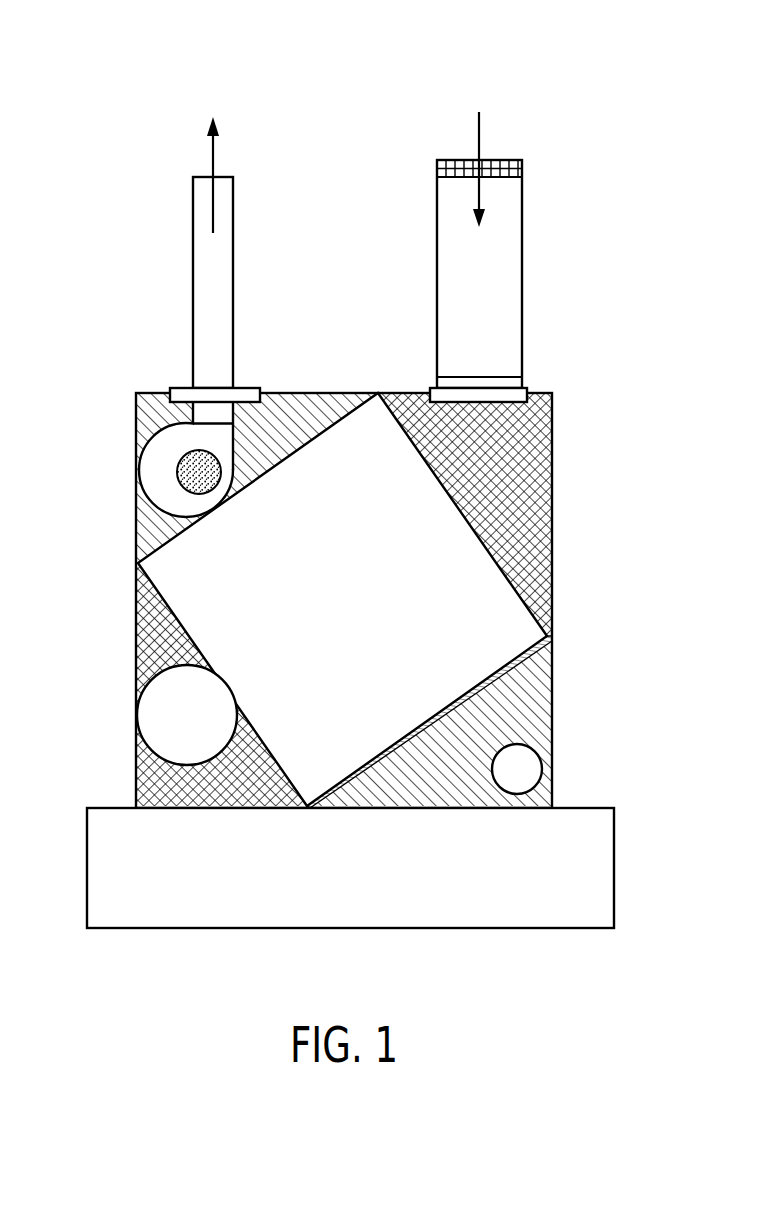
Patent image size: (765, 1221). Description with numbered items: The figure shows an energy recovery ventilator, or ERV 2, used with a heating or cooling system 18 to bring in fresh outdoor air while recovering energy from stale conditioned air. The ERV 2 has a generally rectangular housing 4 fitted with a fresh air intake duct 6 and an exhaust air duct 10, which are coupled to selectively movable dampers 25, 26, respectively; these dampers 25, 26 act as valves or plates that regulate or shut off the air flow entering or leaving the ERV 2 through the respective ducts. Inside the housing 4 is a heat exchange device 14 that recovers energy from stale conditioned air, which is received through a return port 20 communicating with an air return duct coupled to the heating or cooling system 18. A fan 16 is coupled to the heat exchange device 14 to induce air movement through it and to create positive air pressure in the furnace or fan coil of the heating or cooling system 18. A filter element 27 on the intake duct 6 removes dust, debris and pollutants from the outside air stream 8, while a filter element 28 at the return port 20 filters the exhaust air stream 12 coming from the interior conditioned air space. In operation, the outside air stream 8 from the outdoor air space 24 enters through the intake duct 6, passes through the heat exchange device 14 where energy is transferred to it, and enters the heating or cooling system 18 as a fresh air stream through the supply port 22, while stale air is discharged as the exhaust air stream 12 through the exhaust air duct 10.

The energy recovery ventilator 2 is at (590, 441).
The housing 4 is at (148, 628).
The fresh air intake duct 6 is at (513, 280).
The outside air stream 8 is at (481, 130).
The exhaust air duct 10 is at (202, 282).
The exhaust air stream 12 is at (212, 157).
The heat exchange device 14 is at (493, 638).
The fan 16 is at (158, 463).
The heating or cooling system 18 is at (70, 830).
The return port 20 is at (528, 770).
The supply port 22 is at (158, 727).
The outdoor air space 24 is at (330, 140).
The damper 25 is at (180, 395).
The damper 26 is at (522, 387).
The filter element 27 is at (513, 168).
The filter element 28 is at (545, 642).